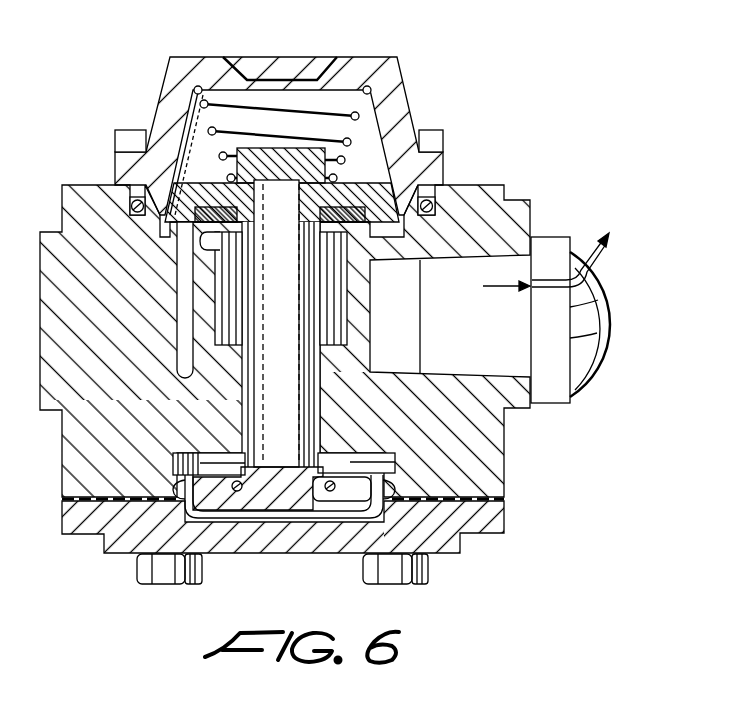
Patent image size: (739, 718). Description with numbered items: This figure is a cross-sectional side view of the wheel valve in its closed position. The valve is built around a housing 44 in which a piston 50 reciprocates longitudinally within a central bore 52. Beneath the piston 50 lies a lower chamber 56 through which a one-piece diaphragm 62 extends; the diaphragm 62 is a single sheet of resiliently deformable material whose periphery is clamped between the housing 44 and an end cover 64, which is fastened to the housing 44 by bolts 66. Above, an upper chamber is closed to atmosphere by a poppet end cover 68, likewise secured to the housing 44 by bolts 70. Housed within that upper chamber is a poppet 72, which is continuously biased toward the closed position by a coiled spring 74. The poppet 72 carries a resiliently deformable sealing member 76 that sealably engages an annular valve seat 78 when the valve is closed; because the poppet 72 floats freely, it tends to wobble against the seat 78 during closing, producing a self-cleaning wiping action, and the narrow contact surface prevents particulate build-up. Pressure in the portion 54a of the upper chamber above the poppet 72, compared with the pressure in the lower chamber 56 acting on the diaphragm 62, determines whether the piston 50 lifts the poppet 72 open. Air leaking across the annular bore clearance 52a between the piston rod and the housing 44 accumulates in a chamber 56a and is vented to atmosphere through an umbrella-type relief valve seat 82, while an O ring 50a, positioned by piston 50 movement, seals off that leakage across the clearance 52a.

The housing 44 is at (515, 189).
The poppet end cover 68 is at (177, 77).
The bolts 70 is at (117, 139).
The portion of upper chamber 54a is at (197, 125).
The resiliently deformable sealing member 76 is at (393, 213).
The poppet 72 is at (263, 158).
The coiled spring 74 is at (358, 116).
The piston 50 is at (285, 324).
The central bore 52 is at (322, 393).
The annular valve seat 78 is at (217, 255).
The annular bore clearance 52a is at (242, 397).
The umbrella-type relief valve seat 82 is at (586, 282).
The O ring 50a is at (177, 470).
The chamber 56a is at (360, 462).
The one-piece diaphragm 62 is at (239, 520).
The lower chamber 56 is at (314, 522).
The end cover 64 is at (497, 518).
The bolts 66 is at (137, 580).